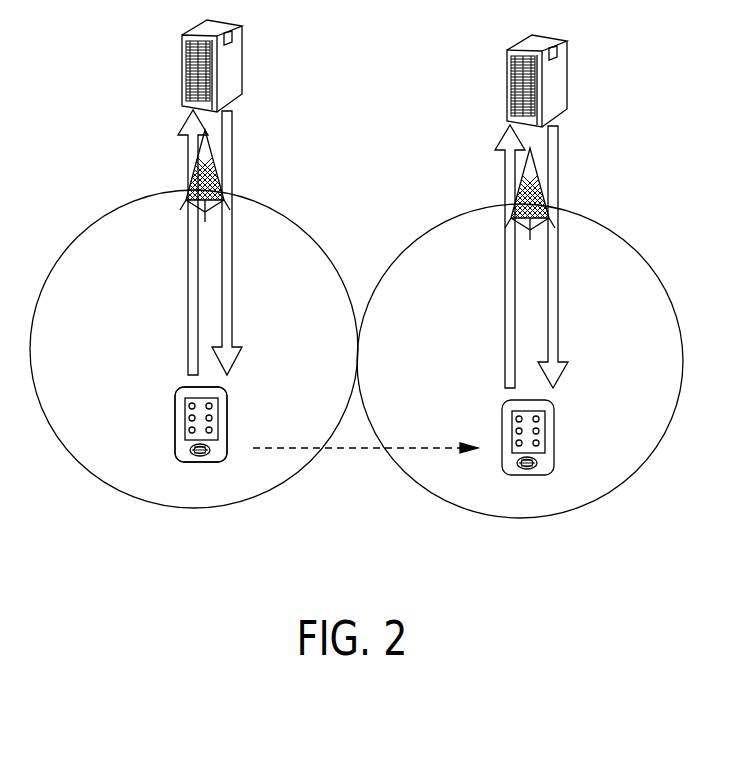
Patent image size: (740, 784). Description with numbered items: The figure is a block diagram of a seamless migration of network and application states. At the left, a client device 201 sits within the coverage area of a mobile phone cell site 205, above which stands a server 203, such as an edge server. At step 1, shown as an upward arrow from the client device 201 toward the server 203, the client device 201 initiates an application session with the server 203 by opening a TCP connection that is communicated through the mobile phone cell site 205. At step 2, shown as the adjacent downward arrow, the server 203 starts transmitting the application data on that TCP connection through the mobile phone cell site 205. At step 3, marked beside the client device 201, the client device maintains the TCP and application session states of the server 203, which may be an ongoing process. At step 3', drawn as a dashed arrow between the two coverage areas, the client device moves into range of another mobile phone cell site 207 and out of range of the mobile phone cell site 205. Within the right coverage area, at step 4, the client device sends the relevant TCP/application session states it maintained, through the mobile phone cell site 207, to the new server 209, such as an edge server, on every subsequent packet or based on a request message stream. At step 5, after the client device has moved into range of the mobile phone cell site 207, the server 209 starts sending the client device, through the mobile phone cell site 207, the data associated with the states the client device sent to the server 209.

The client device 201 is at (200, 463).
The server 203 is at (244, 56).
The mobile phone cell site 205 is at (192, 178).
The mobile phone cell site 207 is at (540, 172).
The server 209 is at (571, 70).
The step 1 is at (186, 242).
The step 2 is at (230, 243).
The step 3 is at (193, 424).
The step 3' is at (365, 460).
The step 4 is at (502, 256).
The step 5 is at (558, 257).